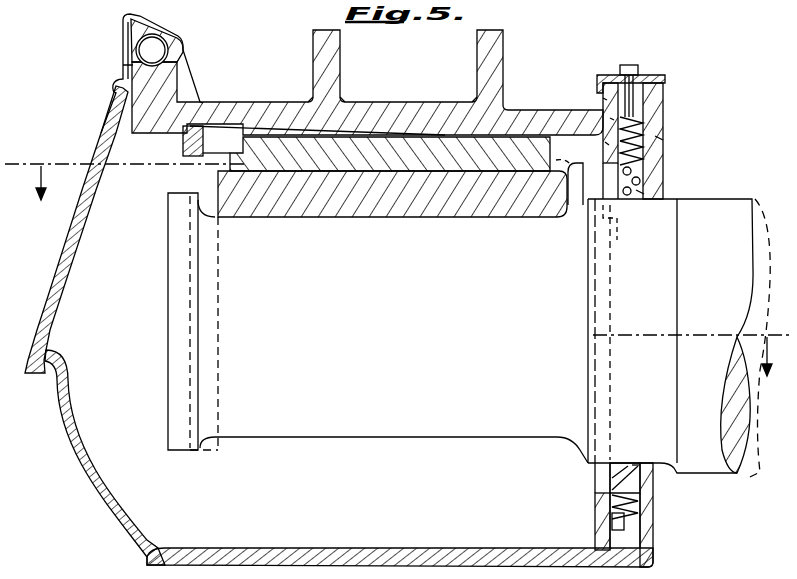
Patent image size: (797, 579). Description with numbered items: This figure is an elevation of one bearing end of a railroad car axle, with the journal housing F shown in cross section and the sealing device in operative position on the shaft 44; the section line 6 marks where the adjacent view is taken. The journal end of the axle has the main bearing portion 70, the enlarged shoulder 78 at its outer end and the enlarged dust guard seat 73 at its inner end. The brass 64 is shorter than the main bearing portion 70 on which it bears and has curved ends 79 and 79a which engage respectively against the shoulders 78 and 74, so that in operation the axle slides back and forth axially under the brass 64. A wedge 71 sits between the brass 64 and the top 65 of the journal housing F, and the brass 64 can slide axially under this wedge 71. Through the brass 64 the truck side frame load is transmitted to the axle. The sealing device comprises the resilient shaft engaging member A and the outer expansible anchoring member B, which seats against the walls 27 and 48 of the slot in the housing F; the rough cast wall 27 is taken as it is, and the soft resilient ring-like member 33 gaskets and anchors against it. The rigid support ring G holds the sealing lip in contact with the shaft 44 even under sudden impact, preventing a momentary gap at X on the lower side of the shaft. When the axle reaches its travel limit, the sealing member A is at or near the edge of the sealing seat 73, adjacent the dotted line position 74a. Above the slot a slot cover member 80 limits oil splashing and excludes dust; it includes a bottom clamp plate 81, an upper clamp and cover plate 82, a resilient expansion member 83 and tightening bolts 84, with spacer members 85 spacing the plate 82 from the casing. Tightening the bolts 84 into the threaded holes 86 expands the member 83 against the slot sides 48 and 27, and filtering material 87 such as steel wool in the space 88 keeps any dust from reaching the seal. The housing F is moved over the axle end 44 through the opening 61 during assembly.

The housing F is at (339, 48).
The top of the journal housing 65 is at (370, 96).
The wedge 71 is at (275, 135).
The curved end 79 is at (243, 178).
The curved end 79a is at (545, 200).
The brass 64 is at (392, 203).
The enlarged shoulder 78 is at (218, 372).
The main bearing portion 70 is at (341, 438).
The shaft 44 is at (437, 331).
The dust guard seat 73 is at (703, 197).
The shoulder 74 is at (583, 462).
The dotted line position 74a is at (612, 210).
The upper clamp and cover plate 82 is at (667, 78).
The tightening bolts 84 is at (634, 68).
The spacer members 85 is at (627, 76).
The wall of the slot 48 is at (600, 135).
The wall of the slot 27 is at (655, 143).
The resilient expansion member 83 is at (650, 107).
The bottom clamp plate 81 is at (650, 127).
The space 88 is at (660, 138).
The slot cover member 80 is at (605, 99).
The threaded holes 86 is at (610, 120).
The filtering material 87 is at (608, 143).
The opening 61 is at (648, 196).
The resilient shaft engaging member A is at (650, 192).
The lip contact point X is at (618, 463).
The support ring G is at (640, 463).
The resilient ring-like member 33 is at (653, 513).
The outer expansible anchoring member B is at (610, 523).
The section line 6- 6 is at (397, 280).